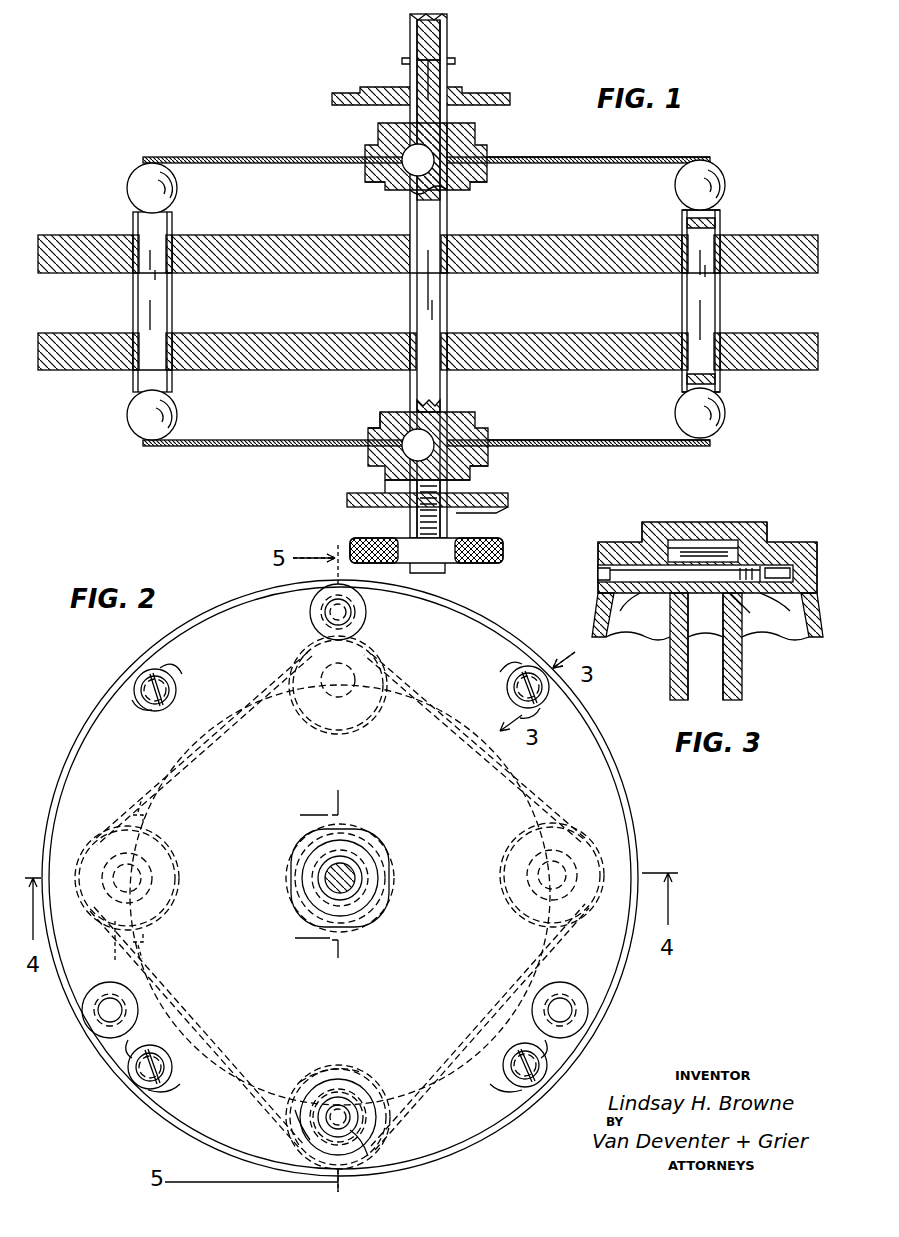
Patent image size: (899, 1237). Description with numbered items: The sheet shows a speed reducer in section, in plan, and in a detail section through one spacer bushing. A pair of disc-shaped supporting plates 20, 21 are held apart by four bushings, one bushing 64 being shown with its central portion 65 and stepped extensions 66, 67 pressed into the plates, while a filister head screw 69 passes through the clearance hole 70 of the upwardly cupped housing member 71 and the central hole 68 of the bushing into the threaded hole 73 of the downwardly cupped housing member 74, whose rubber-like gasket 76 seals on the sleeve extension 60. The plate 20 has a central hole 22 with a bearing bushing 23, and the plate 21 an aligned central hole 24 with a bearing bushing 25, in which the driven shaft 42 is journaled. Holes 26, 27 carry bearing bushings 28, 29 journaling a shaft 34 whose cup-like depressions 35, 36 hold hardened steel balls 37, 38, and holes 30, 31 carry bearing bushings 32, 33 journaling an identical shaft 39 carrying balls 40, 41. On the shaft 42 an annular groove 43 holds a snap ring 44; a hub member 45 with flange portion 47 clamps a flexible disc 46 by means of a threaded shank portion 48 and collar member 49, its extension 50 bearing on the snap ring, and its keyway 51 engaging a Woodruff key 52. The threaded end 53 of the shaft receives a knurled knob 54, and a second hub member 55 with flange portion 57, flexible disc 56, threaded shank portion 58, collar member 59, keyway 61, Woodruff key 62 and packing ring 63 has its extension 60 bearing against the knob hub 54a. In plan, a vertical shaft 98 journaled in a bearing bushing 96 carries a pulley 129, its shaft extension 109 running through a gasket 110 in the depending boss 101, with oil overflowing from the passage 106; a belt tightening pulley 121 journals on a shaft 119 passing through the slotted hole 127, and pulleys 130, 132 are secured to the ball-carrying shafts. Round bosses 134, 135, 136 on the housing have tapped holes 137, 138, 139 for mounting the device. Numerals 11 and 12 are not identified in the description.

In FIG. 1, the housing plate 11 is at (519, 99).
In FIG. 3, the cover block 12 is at (608, 542).
In FIG. 1, the supporting plate 20 is at (748, 240).
In FIG. 3, the supporting plate 20 is at (670, 660).
In FIG. 1, the supporting plate 21 is at (770, 328).
In FIG. 3, the supporting plate 21 is at (742, 660).
In FIG. 1, the central hole 22 is at (447, 276).
In FIG. 1, the bearing bushing 23 is at (450, 236).
In FIG. 1, the central hole 24 is at (447, 334).
In FIG. 1, the bearing bushing 25 is at (410, 334).
In FIG. 1, the hole 26 is at (722, 278).
In FIG. 1, the hole 27 is at (722, 372).
In FIG. 1, the bearing bushing 28 is at (722, 238).
In FIG. 1, the bearing bushing 29 is at (680, 372).
In FIG. 1, the hole 30 is at (172, 280).
In FIG. 1, the hole 31 is at (172, 378).
In FIG. 1, the bearing bushing 32 is at (172, 236).
In FIG. 1, the bearing bushing 33 is at (172, 334).
In FIG. 1, the shaft 34 is at (690, 296).
In FIG. 2, the shaft 34 is at (540, 892).
In FIG. 1, the cup-like depression 35 is at (722, 394).
In FIG. 1, the cup-like depression 36 is at (690, 218).
In FIG. 1, the hardened steel ball 37 is at (722, 422).
In FIG. 1, the hardened steel ball 38 is at (722, 176).
In FIG. 1, the shaft 39 is at (150, 300).
In FIG. 2, the shaft 39 is at (138, 866).
In FIG. 1, the hardened steel ball 40 is at (132, 424).
In FIG. 1, the hardened steel ball 41 is at (130, 196).
In FIG. 1, the shaft 42 is at (442, 216).
In FIG. 2, the shaft 42 is at (352, 870).
In FIG. 1, the annular groove 43 is at (440, 58).
In FIG. 1, the snap ring 44 is at (408, 62).
In FIG. 1, the hub member 45 is at (385, 190).
In FIG. 1, the flexible disc 46 is at (500, 158).
In FIG. 1, the flange portion 47 is at (488, 178).
In FIG. 1, the threaded shank portion 48 is at (452, 122).
In FIG. 1, the collar member 49 is at (368, 136).
In FIG. 1, the extension 50 is at (448, 84).
In FIG. 1, the longitudinal keyway 51 is at (412, 196).
In FIG. 1, the Woodruff key 52 is at (405, 166).
In FIG. 1, the threaded end 53 is at (445, 522).
In FIG. 1, the knurled knob 54 is at (504, 550).
In FIG. 2, the knurled knob 54 is at (392, 870).
In FIG. 1, the hub of knob 54a is at (351, 548).
In FIG. 1, the hub member 55 is at (480, 420).
In FIG. 1, the flexible disc 56 is at (530, 440).
In FIG. 2, the flexible disc 56 is at (540, 768).
In FIG. 1, the flange portion 57 is at (370, 430).
In FIG. 1, the threaded shank portion 58 is at (472, 480).
In FIG. 1, the collar member 59 is at (488, 464).
In FIG. 1, the extension 60 is at (414, 515).
In FIG. 1, the longitudinal keyway 61 is at (388, 490).
In FIG. 1, the Woodruff key 62 is at (405, 452).
In FIG. 1, the packing ring 63 is at (447, 404).
In FIG. 3, the bushing 64 is at (712, 600).
In FIG. 3, the central portion 65 is at (680, 600).
In FIG. 3, the stepped extension 66 is at (746, 596).
In FIG. 3, the stepped extension 67 is at (660, 594).
In FIG. 3, the central hole 68 is at (712, 560).
In FIG. 3, the filister head screw 69 is at (600, 572).
In FIG. 3, the clearance hole 70 is at (644, 540).
In FIG. 3, the housing member 71 is at (592, 603).
In FIG. 2, the housing member 71 is at (614, 778).
In FIG. 3, the threaded hole 73 is at (768, 542).
In FIG. 1, the housing member 74 is at (517, 502).
In FIG. 3, the housing member 74 is at (812, 542).
In FIG. 1, the rubber-like gasket 76 is at (470, 514).
In FIG. 2, the bearing bushing 96 is at (360, 1112).
In FIG. 2, the vertical shaft 98 is at (364, 1098).
In FIG. 2, the depending boss 101 is at (365, 1120).
In FIG. 2, the passage 106 is at (320, 1076).
In FIG. 2, the shaft extension 109 is at (364, 1140).
In FIG. 2, the gasket 110 is at (322, 1136).
In FIG. 2, the shaft 119 is at (330, 700).
In FIG. 2, the pulley 121 is at (352, 728).
In FIG. 2, the slotted hole 127 is at (350, 668).
In FIG. 2, the pulley 129 is at (352, 1080).
In FIG. 2, the pulley 130 is at (170, 872).
In FIG. 2, the pulley 132 is at (506, 868).
In FIG. 2, the round boss 134 is at (366, 608).
In FIG. 2, the round boss 135 is at (556, 988).
In FIG. 2, the round boss 136 is at (92, 990).
In FIG. 2, the tapped hole 137 is at (330, 614).
In FIG. 2, the tapped hole 138 is at (568, 1010).
In FIG. 2, the tapped hole 139 is at (114, 1024).